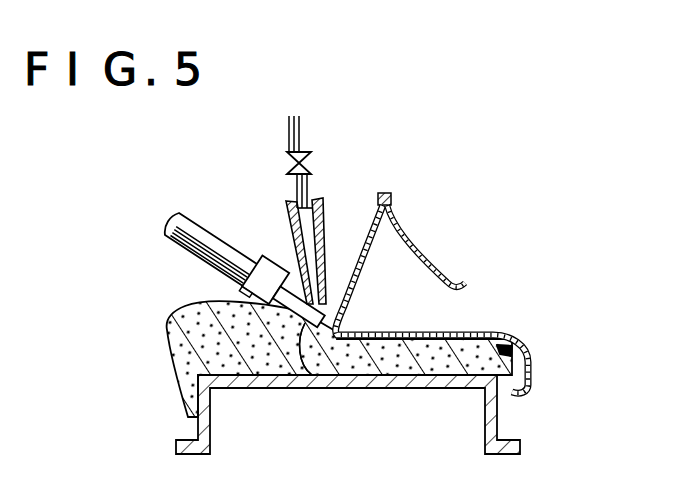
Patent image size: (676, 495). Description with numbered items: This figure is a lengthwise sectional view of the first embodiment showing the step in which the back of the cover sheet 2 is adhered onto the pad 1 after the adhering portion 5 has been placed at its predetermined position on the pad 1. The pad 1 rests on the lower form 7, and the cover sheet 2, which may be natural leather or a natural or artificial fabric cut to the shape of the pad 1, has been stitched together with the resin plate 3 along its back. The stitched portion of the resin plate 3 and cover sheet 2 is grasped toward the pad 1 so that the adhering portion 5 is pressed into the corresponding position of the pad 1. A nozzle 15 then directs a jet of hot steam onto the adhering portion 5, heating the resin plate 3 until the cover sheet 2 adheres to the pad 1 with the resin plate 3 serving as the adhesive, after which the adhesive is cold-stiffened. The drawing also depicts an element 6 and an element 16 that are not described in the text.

The pad 1 is at (197, 363).
The cover sheet 2 is at (396, 223).
The resin plate 3 is at (306, 349).
The adhering portion 5 is at (312, 375).
The dispenser 6 is at (193, 263).
The lower form 7 is at (197, 427).
The nozzle 15 is at (287, 208).
The supply tube 16 is at (300, 128).